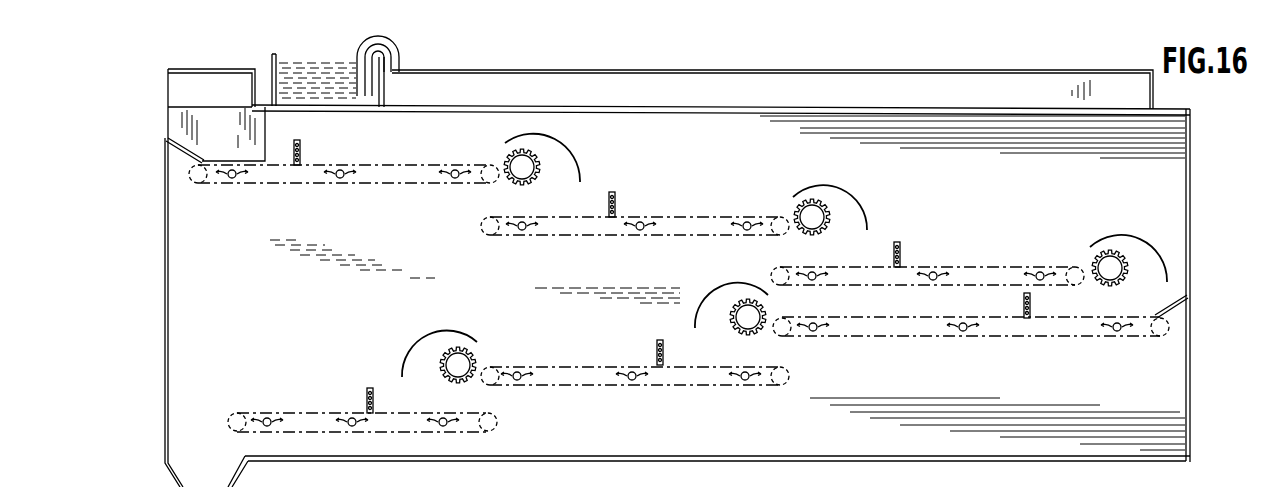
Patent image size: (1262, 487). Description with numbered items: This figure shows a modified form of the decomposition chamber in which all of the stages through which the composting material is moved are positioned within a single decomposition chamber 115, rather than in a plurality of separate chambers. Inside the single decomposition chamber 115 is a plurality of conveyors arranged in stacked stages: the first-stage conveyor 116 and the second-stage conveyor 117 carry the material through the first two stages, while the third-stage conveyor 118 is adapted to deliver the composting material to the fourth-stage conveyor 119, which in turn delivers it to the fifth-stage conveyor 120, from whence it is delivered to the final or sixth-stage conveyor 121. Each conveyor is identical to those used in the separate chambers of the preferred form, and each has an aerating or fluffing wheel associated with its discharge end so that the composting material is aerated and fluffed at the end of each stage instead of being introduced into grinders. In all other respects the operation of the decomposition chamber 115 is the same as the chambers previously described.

The single decomposition chamber 115 is at (165, 327).
The first-stage conveyor 116 is at (431, 149).
The second-stage conveyor 117 is at (726, 200).
The third-stage conveyor 118 is at (986, 251).
The fourth-stage conveyor 119 is at (966, 340).
The fifth-stage conveyor 120 is at (697, 388).
The sixth-stage conveyor 121 is at (288, 413).